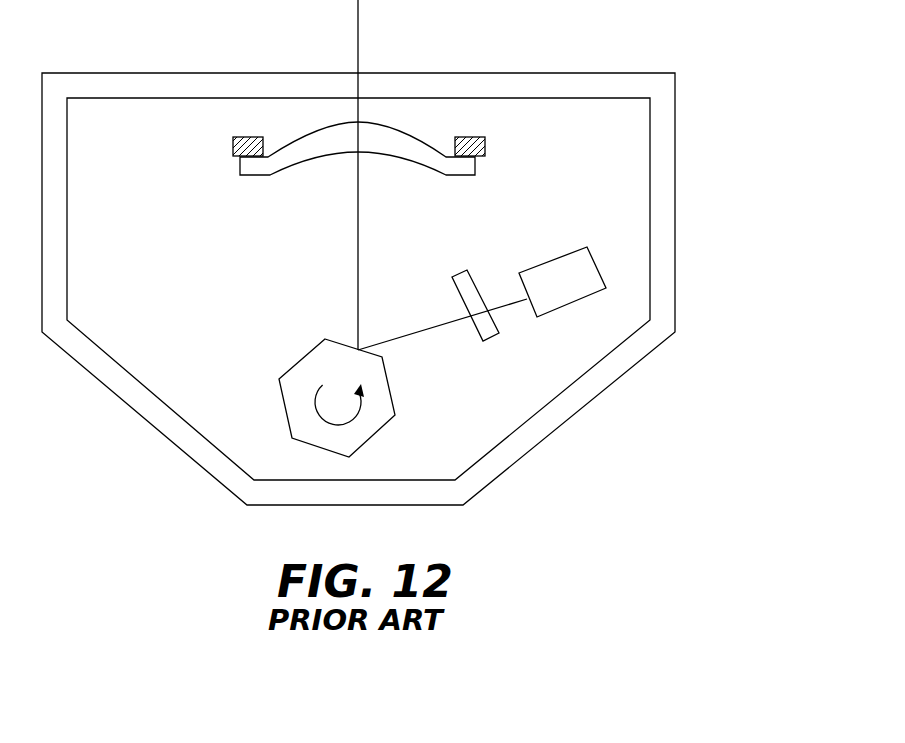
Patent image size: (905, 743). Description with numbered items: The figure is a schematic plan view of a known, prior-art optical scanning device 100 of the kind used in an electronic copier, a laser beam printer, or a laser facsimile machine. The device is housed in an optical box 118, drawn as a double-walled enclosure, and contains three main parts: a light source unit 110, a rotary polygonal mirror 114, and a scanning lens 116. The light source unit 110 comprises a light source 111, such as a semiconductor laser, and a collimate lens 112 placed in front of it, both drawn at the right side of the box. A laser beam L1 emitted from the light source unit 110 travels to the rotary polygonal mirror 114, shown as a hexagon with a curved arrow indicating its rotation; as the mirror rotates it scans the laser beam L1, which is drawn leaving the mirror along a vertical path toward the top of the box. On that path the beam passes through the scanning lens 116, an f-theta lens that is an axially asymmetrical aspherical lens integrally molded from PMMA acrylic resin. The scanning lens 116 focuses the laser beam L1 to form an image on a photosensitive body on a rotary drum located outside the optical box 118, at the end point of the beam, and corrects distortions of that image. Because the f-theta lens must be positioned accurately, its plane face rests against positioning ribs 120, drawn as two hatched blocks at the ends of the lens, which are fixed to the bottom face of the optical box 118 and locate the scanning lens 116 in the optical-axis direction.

The optical scanning device 100 is at (141, 441).
The light source unit 110 is at (538, 386).
The light source 111 is at (548, 270).
The collimate lens 112 is at (466, 286).
The rotary polygonal mirror 114 is at (296, 423).
The scanning lens 116 is at (261, 167).
The optical box 118 is at (663, 170).
The positioning ribs 120 is at (232, 143).
The laser beam L1 is at (359, 59).